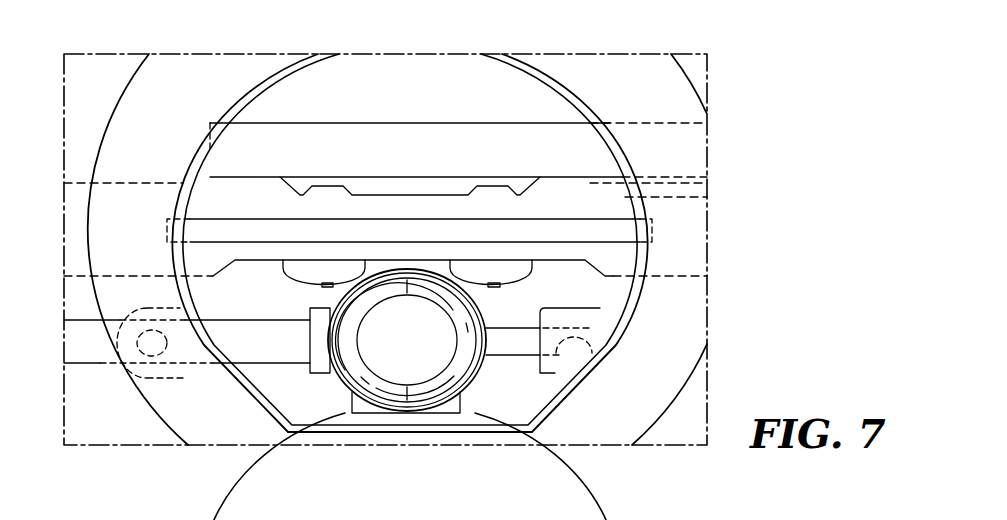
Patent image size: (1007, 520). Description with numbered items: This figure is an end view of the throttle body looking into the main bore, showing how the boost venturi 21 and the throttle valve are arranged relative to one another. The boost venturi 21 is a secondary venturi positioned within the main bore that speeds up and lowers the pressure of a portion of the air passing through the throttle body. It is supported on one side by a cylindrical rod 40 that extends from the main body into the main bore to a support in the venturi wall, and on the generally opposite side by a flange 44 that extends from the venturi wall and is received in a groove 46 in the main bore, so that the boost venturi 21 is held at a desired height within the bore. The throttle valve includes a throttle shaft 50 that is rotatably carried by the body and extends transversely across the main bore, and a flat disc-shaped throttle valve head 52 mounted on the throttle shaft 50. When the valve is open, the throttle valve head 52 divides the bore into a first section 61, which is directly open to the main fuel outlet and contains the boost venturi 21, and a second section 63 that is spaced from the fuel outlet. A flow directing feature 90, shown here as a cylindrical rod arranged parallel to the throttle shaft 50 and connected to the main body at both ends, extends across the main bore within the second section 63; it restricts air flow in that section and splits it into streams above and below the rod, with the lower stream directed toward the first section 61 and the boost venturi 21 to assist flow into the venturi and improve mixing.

The boost venturi 21 is at (427, 392).
The rod 40 is at (273, 345).
The flange 44 is at (509, 346).
The groove 46 is at (578, 340).
The throttle shaft 50 is at (78, 236).
The throttle valve head 52 is at (596, 232).
The first section 61 is at (577, 290).
The second section 63 is at (412, 80).
The flow directing feature 90 is at (528, 145).